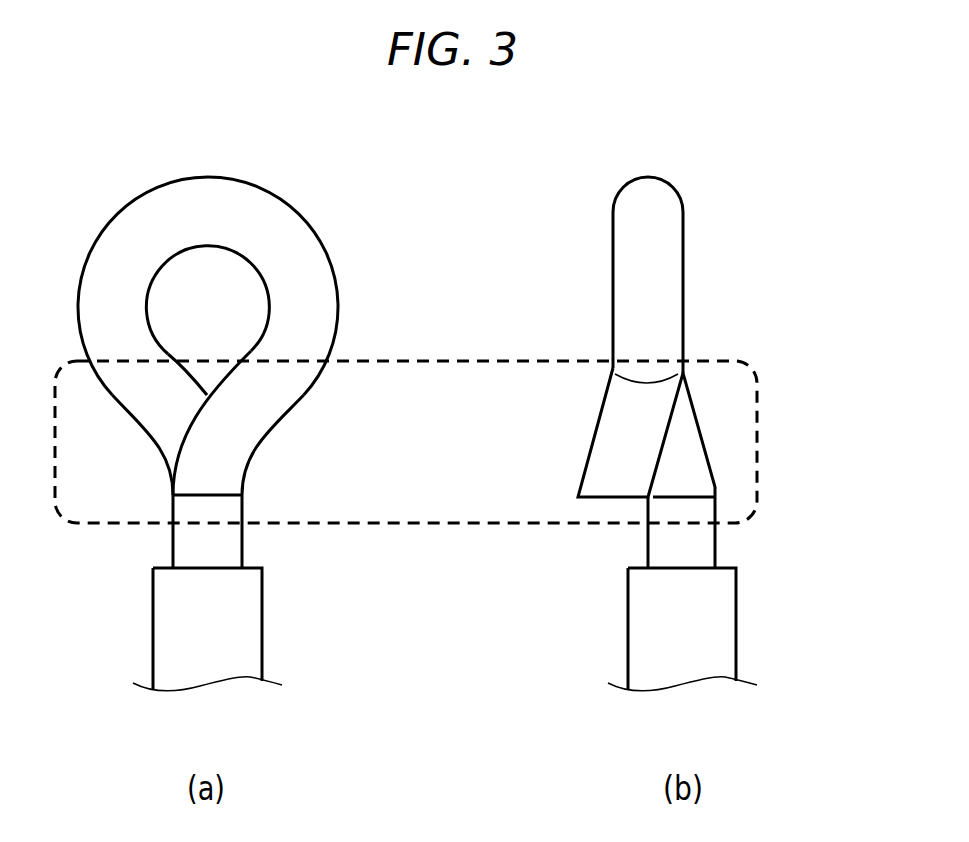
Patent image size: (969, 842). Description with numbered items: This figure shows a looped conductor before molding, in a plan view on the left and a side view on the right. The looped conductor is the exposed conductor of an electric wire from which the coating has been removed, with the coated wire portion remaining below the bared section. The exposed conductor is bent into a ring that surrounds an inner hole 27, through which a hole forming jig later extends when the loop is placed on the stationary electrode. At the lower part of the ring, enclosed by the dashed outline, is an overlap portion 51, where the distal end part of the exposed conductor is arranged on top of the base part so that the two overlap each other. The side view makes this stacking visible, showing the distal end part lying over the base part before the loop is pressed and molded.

The inner hole 27 is at (212, 250).
The overlap portion 51 is at (760, 422).